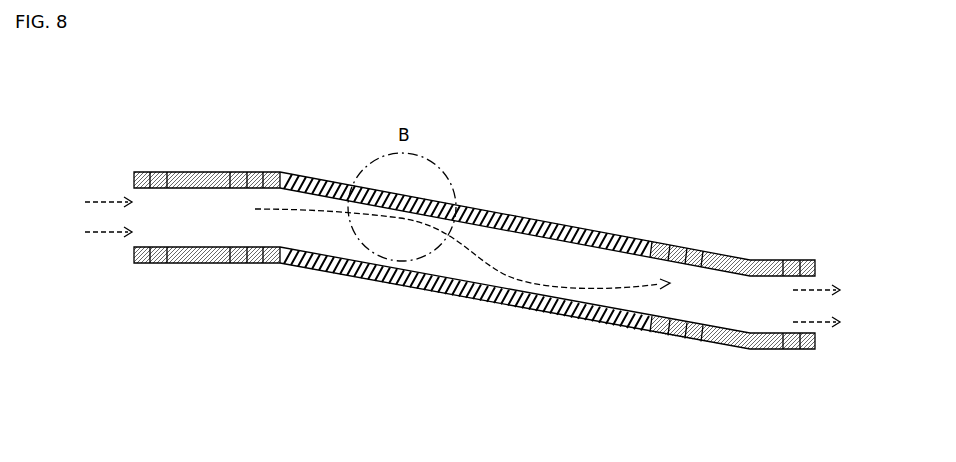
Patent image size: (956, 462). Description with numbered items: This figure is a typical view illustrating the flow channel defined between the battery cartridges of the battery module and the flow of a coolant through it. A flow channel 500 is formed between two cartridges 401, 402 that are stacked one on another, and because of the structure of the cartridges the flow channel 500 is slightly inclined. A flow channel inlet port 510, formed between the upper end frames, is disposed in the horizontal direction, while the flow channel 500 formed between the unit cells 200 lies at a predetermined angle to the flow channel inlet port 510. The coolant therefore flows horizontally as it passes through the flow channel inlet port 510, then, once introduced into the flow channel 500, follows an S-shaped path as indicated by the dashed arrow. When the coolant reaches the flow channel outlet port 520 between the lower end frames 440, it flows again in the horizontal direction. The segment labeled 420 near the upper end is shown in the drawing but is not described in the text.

The unit cell 200 is at (494, 175).
The flow channel 500 is at (474, 329).
The upper inlet portion 420 is at (200, 172).
The lower end frame 440 is at (778, 260).
The flow channel inlet port 510 is at (211, 224).
The flow channel outlet port 520 is at (772, 307).
The cartridge 401 is at (141, 161).
The cartridge 402 is at (124, 271).